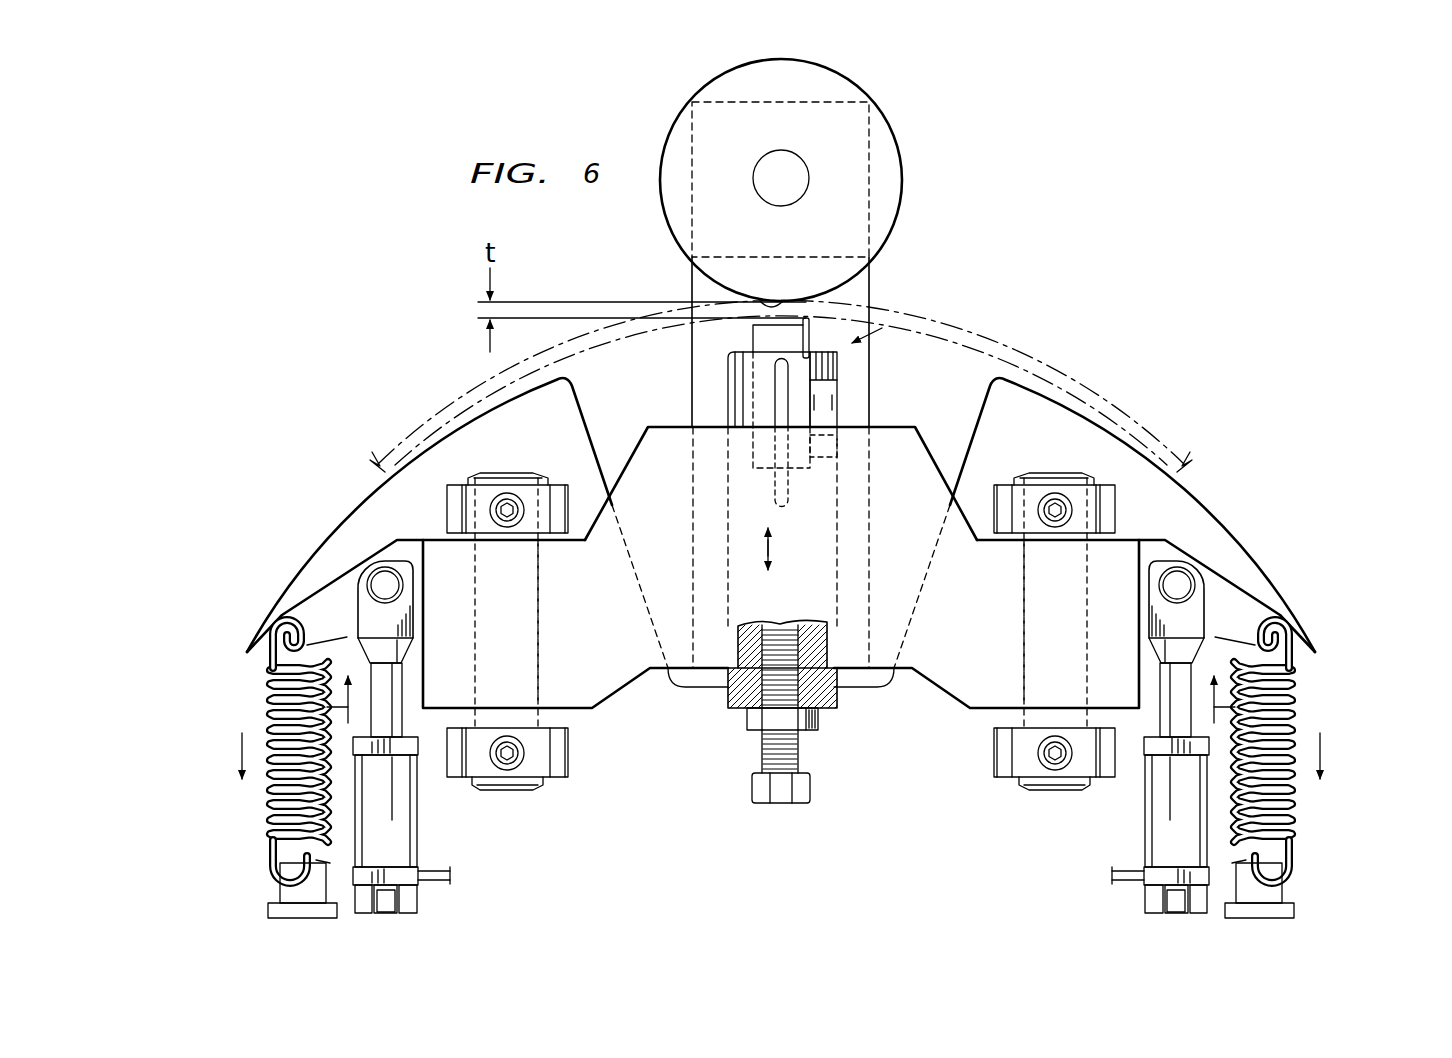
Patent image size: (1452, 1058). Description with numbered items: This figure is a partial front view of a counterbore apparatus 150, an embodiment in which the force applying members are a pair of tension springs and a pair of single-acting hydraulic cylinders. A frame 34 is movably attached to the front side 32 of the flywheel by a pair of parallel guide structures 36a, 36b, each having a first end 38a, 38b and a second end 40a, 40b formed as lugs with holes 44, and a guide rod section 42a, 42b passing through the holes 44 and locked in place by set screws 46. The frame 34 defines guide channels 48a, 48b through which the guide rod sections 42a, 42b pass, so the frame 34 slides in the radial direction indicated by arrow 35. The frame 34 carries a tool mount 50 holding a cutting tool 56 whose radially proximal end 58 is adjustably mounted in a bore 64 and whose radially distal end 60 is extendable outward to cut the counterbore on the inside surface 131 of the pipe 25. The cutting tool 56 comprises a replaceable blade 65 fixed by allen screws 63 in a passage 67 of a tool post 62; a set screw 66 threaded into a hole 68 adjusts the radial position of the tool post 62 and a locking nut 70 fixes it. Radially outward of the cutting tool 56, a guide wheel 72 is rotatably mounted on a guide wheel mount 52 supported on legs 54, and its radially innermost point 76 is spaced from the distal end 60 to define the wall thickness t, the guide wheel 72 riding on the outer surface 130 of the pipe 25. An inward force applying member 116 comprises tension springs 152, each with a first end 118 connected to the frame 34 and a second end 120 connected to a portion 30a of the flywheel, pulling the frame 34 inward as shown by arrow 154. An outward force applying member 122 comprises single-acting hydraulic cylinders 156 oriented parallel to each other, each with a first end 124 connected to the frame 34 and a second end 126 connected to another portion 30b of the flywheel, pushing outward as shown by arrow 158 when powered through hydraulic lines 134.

The guide wheel 72 is at (880, 104).
The guide wheel mount 52 is at (870, 187).
The support legs 54 is at (870, 294).
The radially innermost point of guide wheel 76 is at (766, 298).
The radially distal end of cutting tool 60 is at (805, 317).
The replaceable blade 65 is at (752, 332).
The tool post 62 is at (727, 378).
The passage 67 is at (760, 460).
The allen screws 63 is at (838, 407).
The cutting tool 56 is at (862, 338).
The front side of flywheel 32 is at (1208, 517).
The tool mount 50 is at (651, 427).
The bore 64 is at (736, 585).
The arrow denoting radial direction 35 is at (770, 548).
The frame 34 is at (968, 636).
The radially proximal end of cutting tool 58 is at (737, 652).
The hole 68 is at (748, 712).
The locking nut 70 is at (819, 720).
The set screw 66 is at (802, 758).
The first end of guide structure 38b is at (447, 508).
The first end of guide structure 38a is at (1117, 508).
The guide structure 36b is at (507, 462).
The guide structure 36a is at (1056, 462).
The second end of guide structure 40b is at (570, 755).
The second end of guide structure 40a is at (992, 755).
The guide rod section 42b is at (545, 728).
The guide rod section 42a is at (1017, 728).
The set screws 46 is at (508, 527).
The holes 44 is at (540, 500).
The guide channel 48b is at (535, 634).
The guide channel 48a is at (1027, 634).
The first end of outward force applying member 124 is at (357, 590).
The single-acting hydraulic cylinder 156 is at (418, 792).
The second end of outward force applying member 126 is at (418, 899).
The portion of flywheel 30b is at (388, 892).
The hydraulic lines 134 is at (432, 870).
The outward force applying member 122 is at (480, 867).
The tension spring 152 is at (272, 800).
The first end of inward force applying member 118 is at (290, 634).
The second end of inward force applying member 120 is at (278, 878).
The portion of flywheel 30a is at (268, 912).
The arrow denoting outward direction 158 is at (312, 688).
The inward force applying member 116 is at (234, 710).
The arrow denoting inward direction 154 is at (240, 755).
The outer surface of pipe 130 is at (1058, 368).
The inside surface of pipe 131 is at (950, 352).
The pipe 25 is at (1028, 348).
The counterbore apparatus 150 is at (1160, 282).